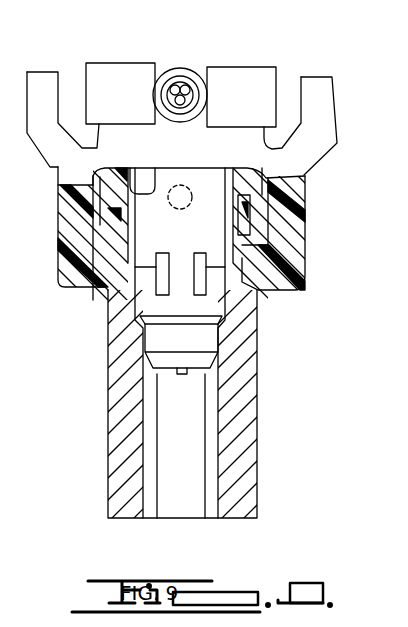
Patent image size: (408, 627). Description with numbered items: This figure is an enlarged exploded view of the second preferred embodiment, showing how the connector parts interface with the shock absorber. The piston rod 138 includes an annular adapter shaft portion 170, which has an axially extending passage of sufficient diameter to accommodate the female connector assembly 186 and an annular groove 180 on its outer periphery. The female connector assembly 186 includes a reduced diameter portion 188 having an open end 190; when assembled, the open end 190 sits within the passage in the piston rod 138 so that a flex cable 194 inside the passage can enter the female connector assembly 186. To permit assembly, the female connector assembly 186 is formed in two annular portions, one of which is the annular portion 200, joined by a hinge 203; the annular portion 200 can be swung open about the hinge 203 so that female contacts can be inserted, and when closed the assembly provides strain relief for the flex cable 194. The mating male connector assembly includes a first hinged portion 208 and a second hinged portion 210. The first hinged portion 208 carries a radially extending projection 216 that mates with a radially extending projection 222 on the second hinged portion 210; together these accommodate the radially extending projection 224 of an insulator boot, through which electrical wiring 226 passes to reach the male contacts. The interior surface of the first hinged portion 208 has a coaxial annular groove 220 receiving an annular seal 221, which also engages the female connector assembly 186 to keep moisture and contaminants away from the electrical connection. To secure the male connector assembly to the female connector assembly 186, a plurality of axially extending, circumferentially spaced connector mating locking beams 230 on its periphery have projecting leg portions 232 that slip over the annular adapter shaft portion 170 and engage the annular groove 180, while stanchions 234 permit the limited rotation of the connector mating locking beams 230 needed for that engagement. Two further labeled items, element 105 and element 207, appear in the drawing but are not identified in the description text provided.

The passage 105 is at (191, 186).
The piston rod 138 is at (242, 482).
The annular adapter shaft portion 170 is at (60, 238).
The annular groove 180 is at (242, 250).
The female connector assembly 186 is at (212, 194).
The reduced diameter portion 188 is at (208, 352).
The open end 190 is at (163, 380).
The flex cable 194 is at (165, 470).
The annular portion 200 is at (87, 268).
The hinge 203 is at (162, 288).
The plate 207 is at (212, 312).
The first hinged portion 208 is at (115, 128).
The second hinged portion 210 is at (259, 72).
The radially extending projection 216 is at (180, 121).
The coaxial annular groove 220 is at (118, 210).
The annular seal 221 is at (90, 198).
The radially extending projection 222 is at (169, 75).
The radially extending projection 224 is at (190, 81).
The electrical wiring 226 is at (188, 90).
The connector mating locking beams 230 is at (40, 83).
The projecting leg portions 232 is at (290, 224).
The stanchions 234 is at (350, 178).